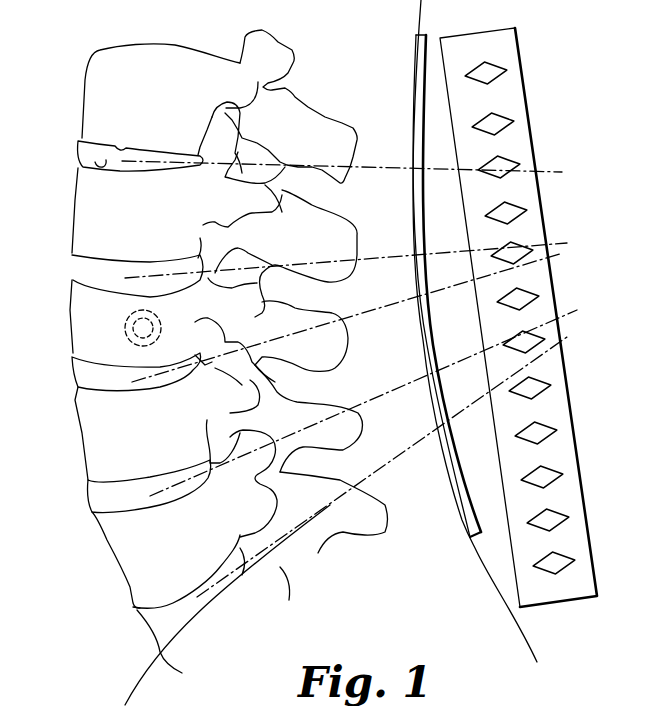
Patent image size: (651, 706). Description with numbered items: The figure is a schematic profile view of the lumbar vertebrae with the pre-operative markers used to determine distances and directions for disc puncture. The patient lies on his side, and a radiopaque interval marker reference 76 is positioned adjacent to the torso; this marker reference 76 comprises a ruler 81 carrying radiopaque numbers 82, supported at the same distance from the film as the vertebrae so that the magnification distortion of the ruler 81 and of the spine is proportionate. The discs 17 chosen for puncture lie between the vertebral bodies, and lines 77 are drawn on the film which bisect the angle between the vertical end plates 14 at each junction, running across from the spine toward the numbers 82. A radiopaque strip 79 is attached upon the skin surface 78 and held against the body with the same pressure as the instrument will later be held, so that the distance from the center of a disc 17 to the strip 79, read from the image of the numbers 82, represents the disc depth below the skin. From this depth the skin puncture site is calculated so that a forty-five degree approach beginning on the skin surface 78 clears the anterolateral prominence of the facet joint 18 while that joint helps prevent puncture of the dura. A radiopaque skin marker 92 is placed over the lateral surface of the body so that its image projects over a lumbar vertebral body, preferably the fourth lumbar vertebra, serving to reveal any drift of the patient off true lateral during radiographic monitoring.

The vertical end plates 14 is at (121, 150).
The disc 17 is at (87, 153).
The facet joint 18 is at (242, 385).
The marker reference 76 is at (523, 50).
The lines 77 is at (418, 450).
The skin surface 78 is at (458, 494).
The radiopaque strip 79 is at (414, 64).
The ruler 81 is at (521, 142).
The radiopaque numbers 82 is at (555, 434).
The radiopaque marker 92 is at (130, 316).